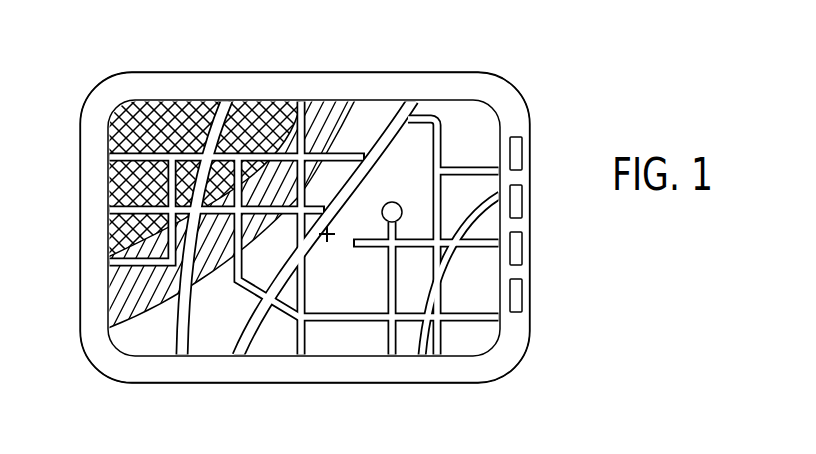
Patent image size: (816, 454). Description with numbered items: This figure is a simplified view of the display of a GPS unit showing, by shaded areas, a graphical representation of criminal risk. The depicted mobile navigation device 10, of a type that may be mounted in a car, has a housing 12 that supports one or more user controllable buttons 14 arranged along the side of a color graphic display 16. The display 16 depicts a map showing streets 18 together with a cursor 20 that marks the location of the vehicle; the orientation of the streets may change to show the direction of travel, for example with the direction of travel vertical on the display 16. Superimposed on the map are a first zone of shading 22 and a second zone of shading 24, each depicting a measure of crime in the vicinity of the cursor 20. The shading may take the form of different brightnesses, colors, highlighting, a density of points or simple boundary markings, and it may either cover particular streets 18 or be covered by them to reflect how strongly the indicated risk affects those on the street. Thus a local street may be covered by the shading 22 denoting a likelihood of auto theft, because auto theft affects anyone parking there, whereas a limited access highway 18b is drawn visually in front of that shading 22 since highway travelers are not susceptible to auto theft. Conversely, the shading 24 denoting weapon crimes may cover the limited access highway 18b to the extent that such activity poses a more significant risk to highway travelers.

The mobile navigation device 10 is at (534, 56).
The housing 12 is at (439, 85).
The user controllable buttons 14 is at (522, 153).
The color graphic display 16 is at (165, 357).
The streets 18 is at (304, 228).
The limited access highway 18b is at (204, 228).
The cursor 20 is at (328, 236).
The first zone of shading 22 is at (229, 180).
The second zone of shading 24 is at (240, 228).